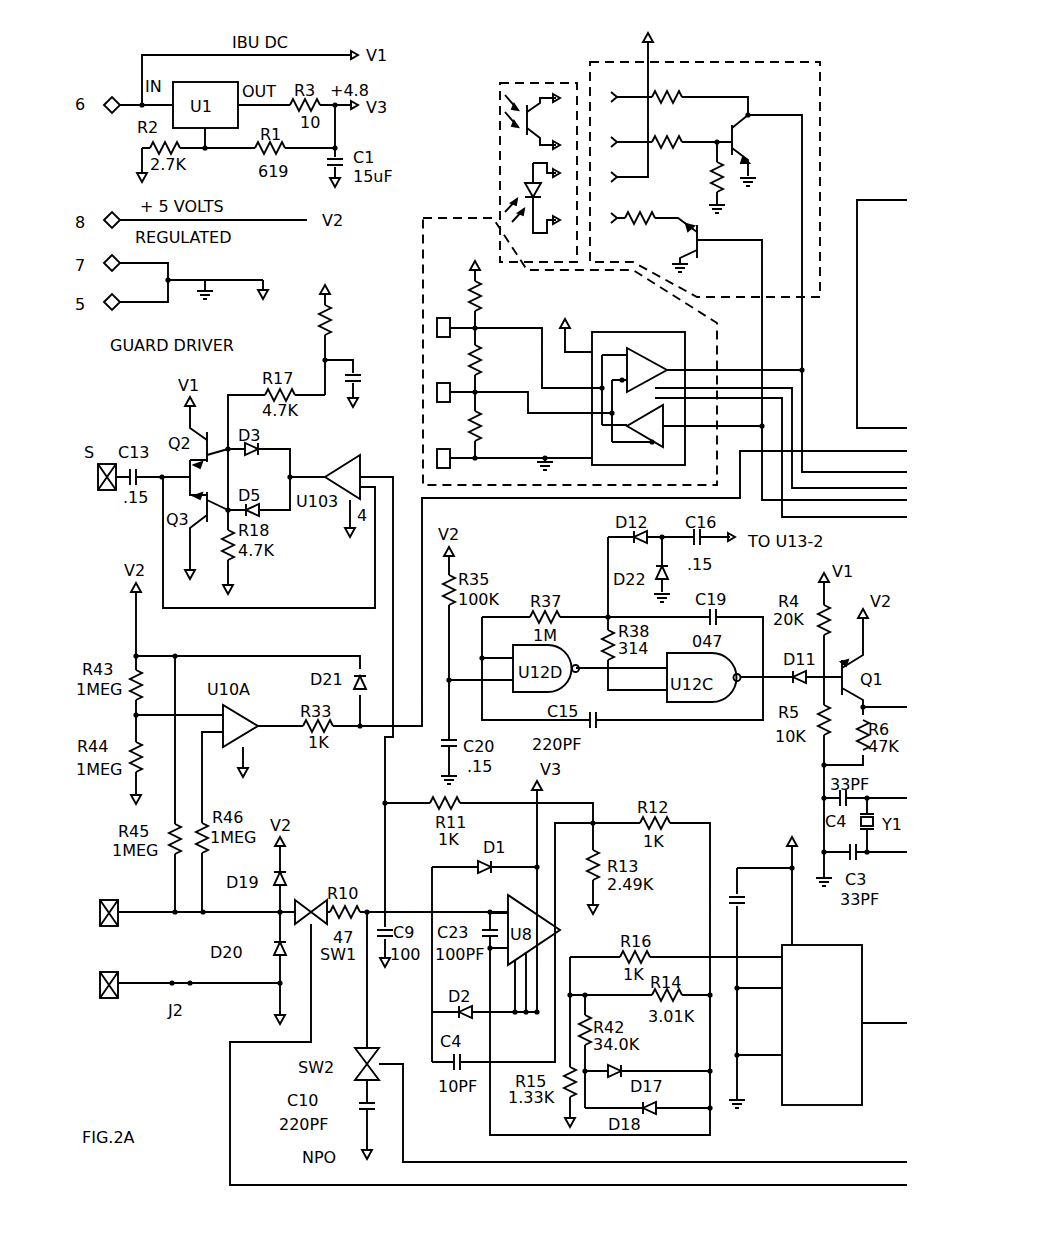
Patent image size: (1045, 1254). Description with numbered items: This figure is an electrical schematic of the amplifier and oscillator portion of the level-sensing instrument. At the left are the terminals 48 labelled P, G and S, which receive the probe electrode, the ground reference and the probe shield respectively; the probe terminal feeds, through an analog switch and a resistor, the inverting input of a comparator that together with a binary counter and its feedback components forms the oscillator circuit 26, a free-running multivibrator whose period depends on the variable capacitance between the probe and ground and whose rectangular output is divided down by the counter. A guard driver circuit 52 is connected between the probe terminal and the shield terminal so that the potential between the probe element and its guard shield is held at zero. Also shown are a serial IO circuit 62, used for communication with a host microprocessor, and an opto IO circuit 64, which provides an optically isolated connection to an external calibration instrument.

The oscillator circuit 26 is at (731, 1120).
The terminals 48 is at (104, 492).
The guard driver circuit 52 is at (300, 322).
The serial IO circuit 62 is at (425, 281).
The opto IO circuit 64 is at (667, 72).